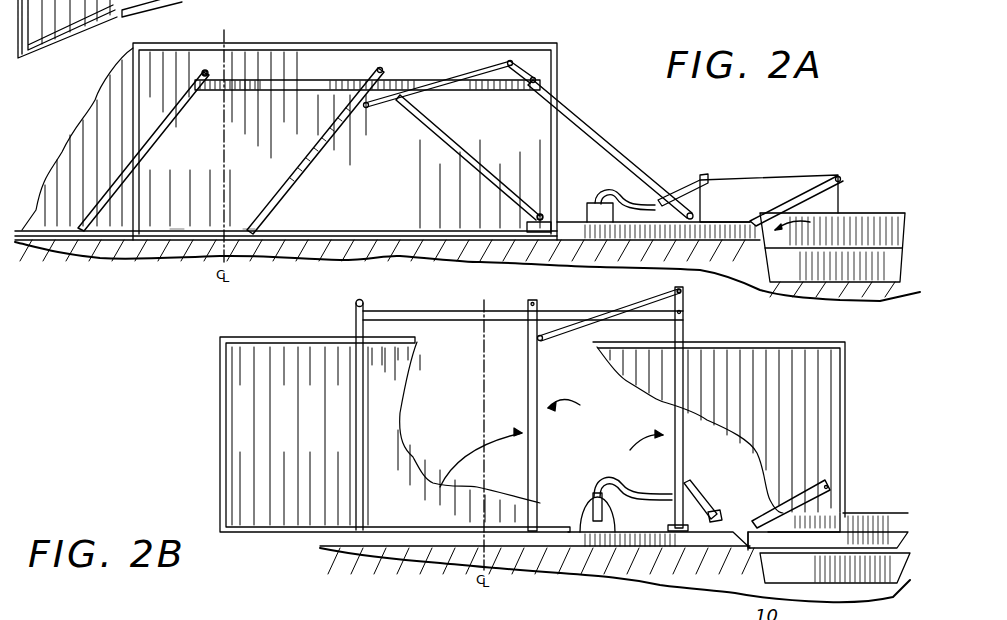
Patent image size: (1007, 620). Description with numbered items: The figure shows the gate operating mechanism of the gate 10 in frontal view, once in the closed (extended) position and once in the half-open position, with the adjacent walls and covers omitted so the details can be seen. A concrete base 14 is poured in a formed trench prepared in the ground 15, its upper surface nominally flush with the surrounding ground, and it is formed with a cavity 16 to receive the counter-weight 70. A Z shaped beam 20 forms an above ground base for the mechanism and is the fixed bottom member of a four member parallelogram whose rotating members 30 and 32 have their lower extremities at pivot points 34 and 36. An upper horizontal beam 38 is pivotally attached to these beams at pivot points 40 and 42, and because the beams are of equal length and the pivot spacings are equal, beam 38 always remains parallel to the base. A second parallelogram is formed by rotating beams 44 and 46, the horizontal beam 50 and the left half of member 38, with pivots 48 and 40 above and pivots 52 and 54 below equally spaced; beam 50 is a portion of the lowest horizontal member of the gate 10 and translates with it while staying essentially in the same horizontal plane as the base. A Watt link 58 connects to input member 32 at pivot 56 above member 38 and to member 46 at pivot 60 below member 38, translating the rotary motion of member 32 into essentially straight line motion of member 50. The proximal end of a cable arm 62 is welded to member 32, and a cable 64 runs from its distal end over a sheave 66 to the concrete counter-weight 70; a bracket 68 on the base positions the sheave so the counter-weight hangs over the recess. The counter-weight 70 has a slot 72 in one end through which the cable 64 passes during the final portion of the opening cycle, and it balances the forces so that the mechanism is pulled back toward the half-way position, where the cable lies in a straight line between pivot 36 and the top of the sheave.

In FIG. 2A, the gate 10 is at (450, 45).
In FIG. 2B, the gate 10 is at (808, 342).
In FIG. 2A, the concrete base 14 is at (716, 262).
In FIG. 2A, the ground 15 is at (908, 294).
In FIG. 2A, the cavity 16 is at (870, 255).
In FIG. 2B, the cavity 16 is at (852, 570).
In FIG. 2A, the Z shaped beam 20 is at (582, 224).
In FIG. 2B, the Z shaped beam 20 is at (625, 530).
In FIG. 2A, the rotating member 30 is at (465, 142).
In FIG. 2B, the rotating member 30 is at (578, 402).
In FIG. 2A, the input member 32 is at (600, 140).
In FIG. 2B, the input member 32 is at (644, 409).
In FIG. 2A, the pivot point 34 is at (540, 210).
In FIG. 2A, the pivot point 36 is at (692, 214).
In FIG. 2A, the upper horizontal beam 38 is at (313, 85).
In FIG. 2B, the upper horizontal beam 38 is at (470, 312).
In FIG. 2A, the pivot point 40 is at (380, 66).
In FIG. 2A, the pivot point 42 is at (540, 80).
In FIG. 2A, the rotating beam 44 is at (170, 112).
In FIG. 2B, the rotating beam 44 is at (355, 322).
In FIG. 2A, the rotating beam 46 is at (328, 150).
In FIG. 2B, the rotating beam 46 is at (530, 378).
In FIG. 2A, the pivot 48 is at (202, 70).
In FIG. 2A, the horizontal beam 50 is at (182, 228).
In FIG. 2A, the pivot 52 is at (74, 226).
In FIG. 2A, the pivot 54 is at (250, 230).
In FIG. 2A, the pivot 56 is at (516, 60).
In FIG. 2A, the Watt link 58 is at (490, 60).
In FIG. 2B, the Watt link 58 is at (628, 300).
In FIG. 2A, the pivot 60 is at (368, 108).
In FIG. 2A, the cable arm 62 is at (670, 182).
In FIG. 2B, the cable arm 62 is at (702, 503).
In FIG. 2A, the cable 64 is at (735, 178).
In FIG. 2A, the sheave 66 is at (842, 180).
In FIG. 2A, the bracket 68 is at (790, 196).
In FIG. 2B, the bracket 68 is at (794, 515).
In FIG. 2A, the counter-weight 70 is at (862, 214).
In FIG. 2B, the counter-weight 70 is at (902, 488).
In FIG. 2A, the slot 72 is at (807, 225).